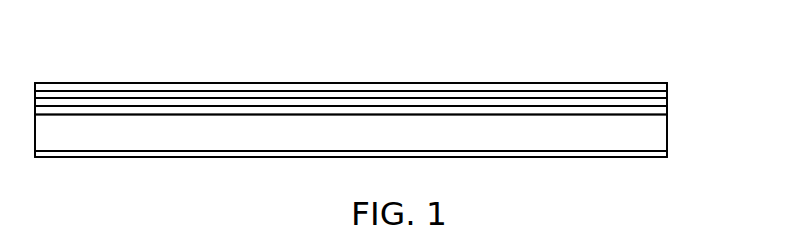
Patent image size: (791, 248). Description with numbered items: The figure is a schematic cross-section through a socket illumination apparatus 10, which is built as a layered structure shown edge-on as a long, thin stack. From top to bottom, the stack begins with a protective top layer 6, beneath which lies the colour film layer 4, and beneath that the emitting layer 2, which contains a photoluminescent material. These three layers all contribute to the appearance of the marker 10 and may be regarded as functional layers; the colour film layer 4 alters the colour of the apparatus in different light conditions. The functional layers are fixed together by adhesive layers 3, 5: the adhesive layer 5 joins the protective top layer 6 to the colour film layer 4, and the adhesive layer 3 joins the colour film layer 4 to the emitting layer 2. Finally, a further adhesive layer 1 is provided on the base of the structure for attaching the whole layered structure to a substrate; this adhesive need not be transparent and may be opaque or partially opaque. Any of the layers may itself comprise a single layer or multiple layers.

The socket illumination apparatus 10 is at (475, 65).
The further adhesive layer 1 is at (671, 155).
The emitting layer 2 is at (671, 135).
The adhesive layer 3 is at (671, 114).
The colour film layer 4 is at (671, 100).
The adhesive layer 5 is at (671, 89).
The protective top layer 6 is at (671, 83).